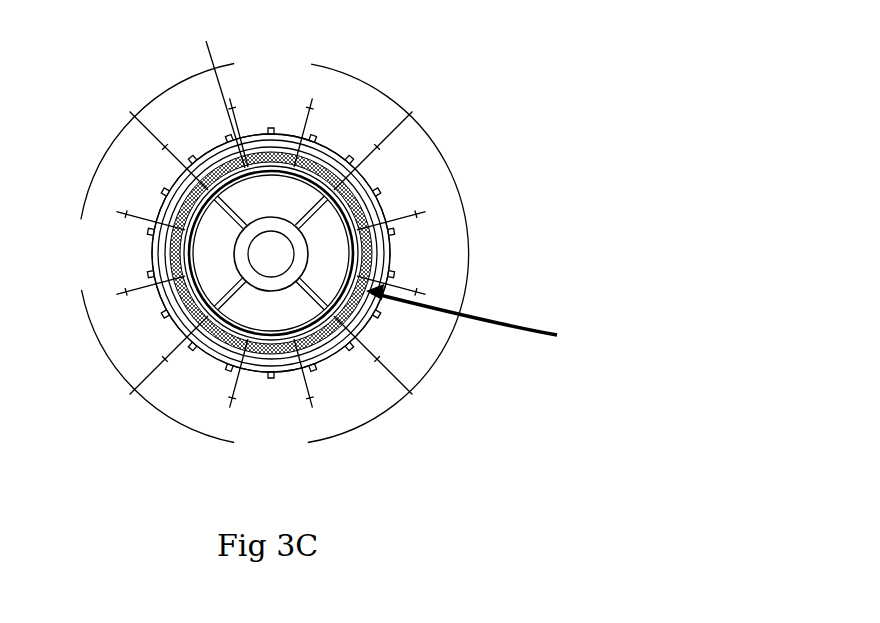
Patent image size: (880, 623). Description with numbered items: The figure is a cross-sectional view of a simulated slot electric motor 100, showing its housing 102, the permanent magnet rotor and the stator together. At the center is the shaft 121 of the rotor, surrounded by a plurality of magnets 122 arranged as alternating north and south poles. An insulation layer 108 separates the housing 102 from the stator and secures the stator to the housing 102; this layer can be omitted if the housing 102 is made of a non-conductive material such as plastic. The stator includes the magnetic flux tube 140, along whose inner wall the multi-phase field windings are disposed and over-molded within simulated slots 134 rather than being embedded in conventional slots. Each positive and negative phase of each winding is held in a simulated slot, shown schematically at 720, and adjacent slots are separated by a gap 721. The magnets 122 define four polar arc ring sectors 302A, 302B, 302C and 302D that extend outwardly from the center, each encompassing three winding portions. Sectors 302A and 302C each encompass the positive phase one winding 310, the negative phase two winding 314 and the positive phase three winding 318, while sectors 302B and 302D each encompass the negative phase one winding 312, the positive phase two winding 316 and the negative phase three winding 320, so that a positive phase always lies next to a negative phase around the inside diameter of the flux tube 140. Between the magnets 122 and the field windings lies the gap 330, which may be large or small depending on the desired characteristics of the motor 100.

The simulated slot electric motor 100 is at (420, 478).
The housing 102 is at (263, 377).
The insulation layer 108 is at (190, 170).
The shaft 121 is at (274, 250).
The magnets 122 is at (206, 42).
The simulated slot 134 is at (380, 262).
The magnetic flux tube 140 is at (377, 213).
The +Ø1 winding 310 is at (183, 400).
The −Ø1 winding 312 is at (138, 172).
The −Ø2 winding 314 is at (278, 107).
The +Ø2 winding 316 is at (111, 267).
The +Ø3 winding 318 is at (198, 110).
The −Ø3 winding 320 is at (383, 176).
The gap 330 is at (357, 183).
The simulated slot 720 is at (497, 320).
The gap 721 is at (357, 328).
The polar arc ring sector 302A is at (349, 401).
The polar arc ring sector 302B is at (139, 341).
The polar arc ring sector 302C is at (191, 132).
The polar arc ring sector 302D is at (407, 197).